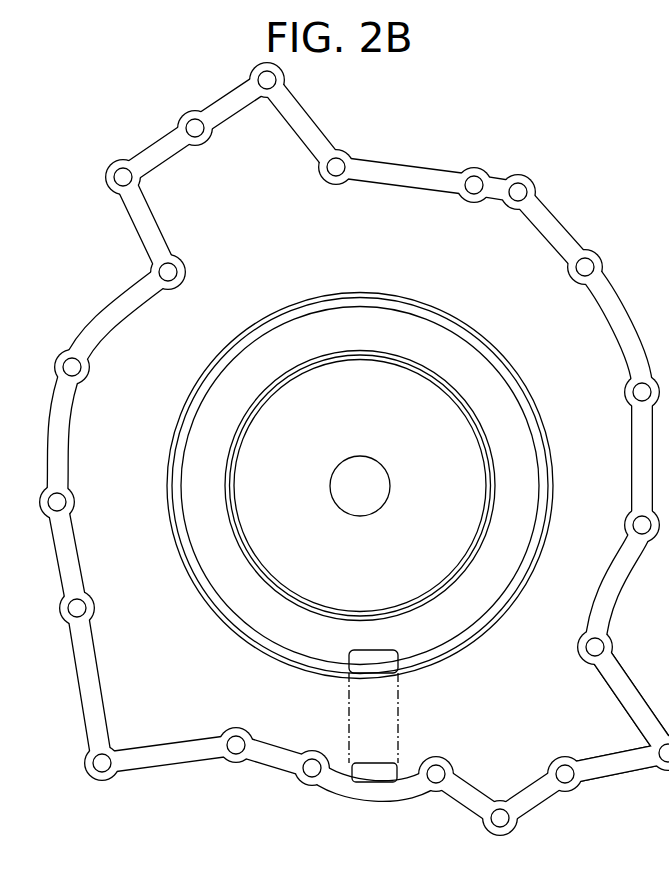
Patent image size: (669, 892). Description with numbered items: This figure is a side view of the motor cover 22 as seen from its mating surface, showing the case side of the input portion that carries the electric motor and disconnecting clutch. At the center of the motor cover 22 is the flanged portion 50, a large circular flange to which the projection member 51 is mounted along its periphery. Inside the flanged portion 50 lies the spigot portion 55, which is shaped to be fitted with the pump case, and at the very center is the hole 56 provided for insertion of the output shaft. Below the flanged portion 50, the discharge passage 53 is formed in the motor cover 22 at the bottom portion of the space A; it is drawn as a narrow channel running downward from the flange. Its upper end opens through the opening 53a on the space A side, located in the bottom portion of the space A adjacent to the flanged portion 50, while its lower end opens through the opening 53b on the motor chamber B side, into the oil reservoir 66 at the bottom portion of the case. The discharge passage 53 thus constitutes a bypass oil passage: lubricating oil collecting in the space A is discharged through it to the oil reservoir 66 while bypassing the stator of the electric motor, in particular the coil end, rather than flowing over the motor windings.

The motor cover 22 is at (447, 168).
The flanged portion 50 is at (468, 327).
The projection member 51 is at (487, 353).
The spigot portion 55 is at (463, 418).
The hole 56 is at (350, 458).
The discharge passage 53 is at (395, 708).
The opening of the discharge passage on the space A side 53a is at (393, 655).
The opening of the discharge passage on the motor chamber B side 53b is at (388, 780).
The oil reservoir 66 is at (595, 742).